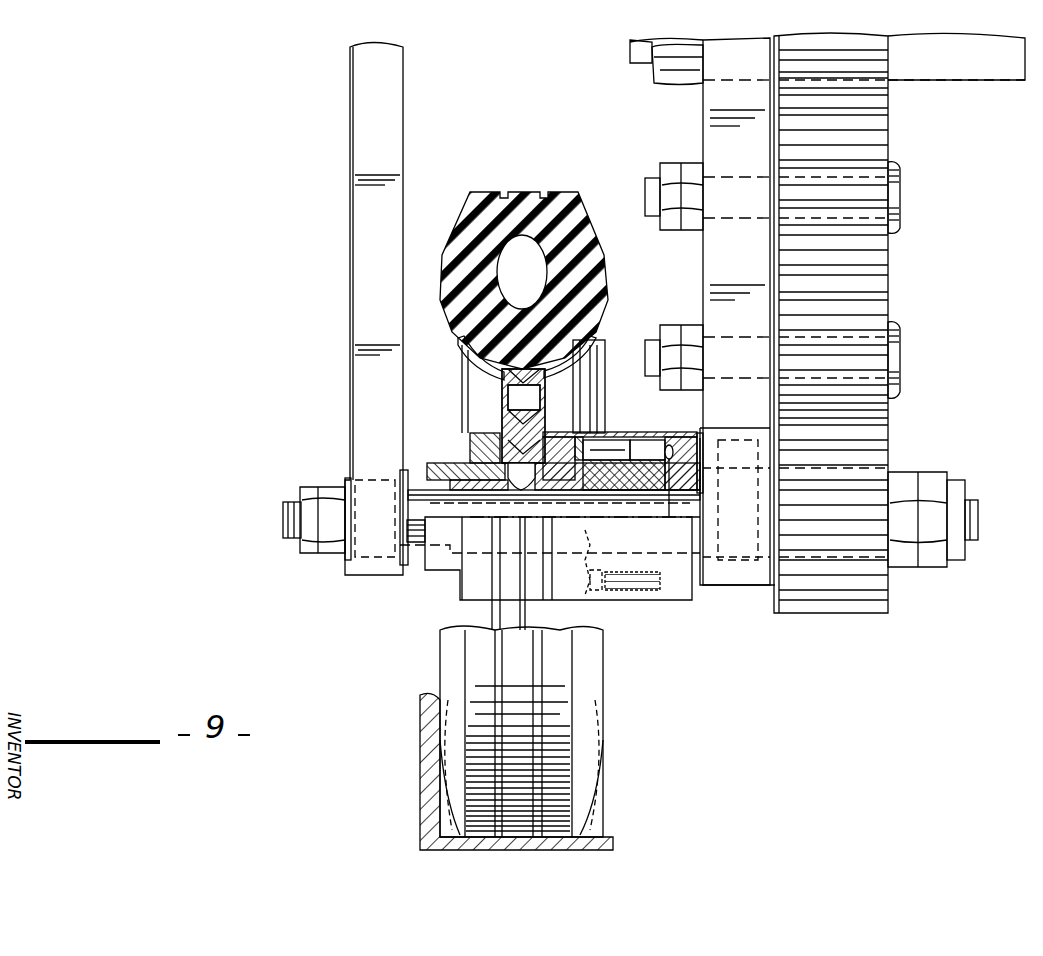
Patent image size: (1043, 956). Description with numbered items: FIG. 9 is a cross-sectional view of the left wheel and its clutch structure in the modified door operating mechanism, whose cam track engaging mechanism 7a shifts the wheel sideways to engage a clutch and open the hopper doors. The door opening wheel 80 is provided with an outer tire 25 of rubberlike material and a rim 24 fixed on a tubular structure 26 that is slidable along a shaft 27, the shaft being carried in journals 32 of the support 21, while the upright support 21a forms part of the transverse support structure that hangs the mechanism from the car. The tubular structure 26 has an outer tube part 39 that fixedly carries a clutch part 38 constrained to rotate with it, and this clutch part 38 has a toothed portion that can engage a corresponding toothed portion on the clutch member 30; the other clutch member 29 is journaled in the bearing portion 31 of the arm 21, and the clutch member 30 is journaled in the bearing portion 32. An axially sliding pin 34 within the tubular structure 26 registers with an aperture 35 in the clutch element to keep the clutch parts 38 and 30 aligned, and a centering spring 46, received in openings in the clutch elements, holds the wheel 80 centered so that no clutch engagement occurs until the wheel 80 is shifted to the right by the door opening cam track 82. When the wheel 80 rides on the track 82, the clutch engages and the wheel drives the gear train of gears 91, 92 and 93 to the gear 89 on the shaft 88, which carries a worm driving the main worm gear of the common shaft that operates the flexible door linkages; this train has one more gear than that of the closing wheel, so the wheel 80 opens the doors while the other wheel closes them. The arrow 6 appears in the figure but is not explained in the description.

The direction arrow 6 is at (968, 382).
The cam track engaging mechanism 7a is at (410, 584).
The depending arm 21 is at (703, 111).
The upright support 21a is at (403, 150).
The rim 24 is at (592, 338).
The outer tire 25 is at (520, 190).
The tubular structure 26 is at (597, 452).
The shaft 27 is at (413, 470).
The clutch member 29 is at (703, 440).
The clutch member 30 is at (702, 430).
The bearing portion 31 is at (355, 487).
The bearing portion 32 is at (715, 487).
The pin structure 34 is at (655, 447).
The aperture 35 is at (668, 460).
The clutch part 38 is at (590, 458).
The outer tube part 39 is at (560, 433).
The centering spring 46 is at (618, 598).
The wheel structure 80 is at (603, 720).
The opening track 82 is at (600, 853).
The shaft 88 is at (993, 82).
The gear 89 is at (893, 88).
The gear 91 is at (890, 588).
The gear 92 is at (890, 418).
The gear 93 is at (890, 248).